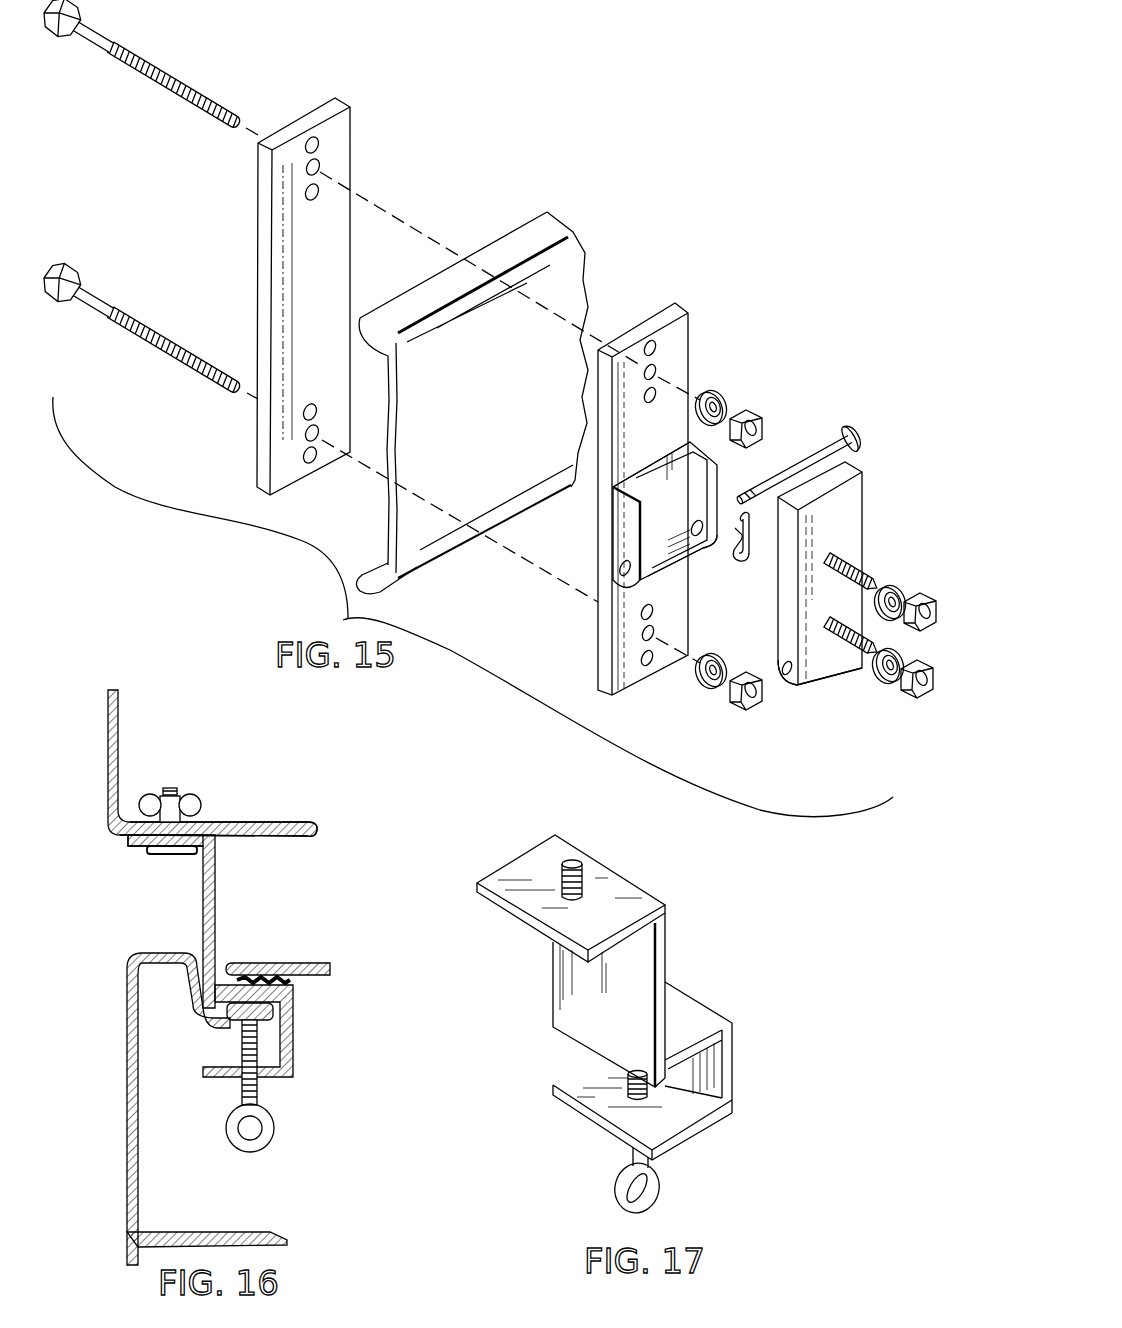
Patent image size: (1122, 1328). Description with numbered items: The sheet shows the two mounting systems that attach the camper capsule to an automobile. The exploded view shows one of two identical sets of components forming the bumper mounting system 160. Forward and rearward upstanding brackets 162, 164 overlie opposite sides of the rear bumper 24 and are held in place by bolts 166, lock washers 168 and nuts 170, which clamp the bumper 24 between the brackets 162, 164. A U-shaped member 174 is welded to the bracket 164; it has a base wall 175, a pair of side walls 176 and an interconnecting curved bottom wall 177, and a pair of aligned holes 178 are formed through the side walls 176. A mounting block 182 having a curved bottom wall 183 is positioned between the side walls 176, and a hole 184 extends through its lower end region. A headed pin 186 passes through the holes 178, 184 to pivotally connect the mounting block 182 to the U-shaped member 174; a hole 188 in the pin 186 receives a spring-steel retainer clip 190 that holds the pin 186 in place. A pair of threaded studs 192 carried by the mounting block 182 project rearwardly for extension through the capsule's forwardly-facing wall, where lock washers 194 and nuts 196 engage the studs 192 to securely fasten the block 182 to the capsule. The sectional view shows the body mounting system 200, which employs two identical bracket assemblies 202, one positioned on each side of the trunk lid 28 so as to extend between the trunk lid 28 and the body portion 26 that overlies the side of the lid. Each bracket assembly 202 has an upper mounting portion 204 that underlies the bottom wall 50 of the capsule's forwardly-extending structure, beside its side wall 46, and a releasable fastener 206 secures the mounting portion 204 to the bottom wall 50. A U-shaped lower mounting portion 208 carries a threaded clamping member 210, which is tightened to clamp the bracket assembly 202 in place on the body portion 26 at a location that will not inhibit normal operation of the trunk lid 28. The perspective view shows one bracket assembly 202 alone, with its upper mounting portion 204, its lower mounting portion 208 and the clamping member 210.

In FIG. 15, the rear bumper 24 is at (573, 270).
In FIG. 16, the body portions 26 is at (168, 957).
In FIG. 16, the trunk lid 28 is at (310, 962).
In FIG. 16, the side wall 46 is at (112, 730).
In FIG. 16, the bottom wall 50 is at (307, 837).
In FIG. 15, the bumper mounting system 160 is at (530, 88).
In FIG. 15, the forward upstanding bracket 162 is at (335, 147).
In FIG. 15, the rearward upstanding bracket 164 is at (673, 340).
In FIG. 15, the bolts 166 is at (153, 58).
In FIG. 15, the lock washers 168 is at (715, 390).
In FIG. 15, the nuts 170 is at (740, 405).
In FIG. 15, the U-shaped member 174 is at (622, 527).
In FIG. 15, the base wall 175 is at (648, 468).
In FIG. 15, the side walls 176 is at (718, 470).
In FIG. 15, the curved bottom wall 177 is at (699, 550).
In FIG. 15, the aligned holes 178 is at (627, 572).
In FIG. 15, the mounting block 182 is at (852, 503).
In FIG. 15, the curved bottom wall 183 is at (832, 668).
In FIG. 15, the hole 184 is at (787, 676).
In FIG. 15, the headed pin 186 is at (793, 468).
In FIG. 15, the hole 188 is at (752, 484).
In FIG. 15, the spring-steel retainer clip 190 is at (733, 562).
In FIG. 15, the threaded studs 192 is at (843, 622).
In FIG. 15, the lock washers 194 is at (928, 566).
In FIG. 15, the nuts 196 is at (908, 628).
In FIG. 16, the clamp assembly 200 is at (257, 793).
In FIG. 16, the bracket assemblies 202 is at (222, 910).
In FIG. 17, the bracket assemblies 202 is at (695, 927).
In FIG. 16, the upper mounting portion 204 is at (137, 842).
In FIG. 17, the upper mounting portion 204 is at (615, 887).
In FIG. 16, the releasable fastener 206 is at (152, 870).
In FIG. 16, the U-shaped lower mounting portion 208 is at (297, 1037).
In FIG. 17, the U-shaped lower mounting portion 208 is at (735, 1068).
In FIG. 16, the threaded clamping member 210 is at (272, 1125).
In FIG. 17, the threaded clamping member 210 is at (658, 1185).